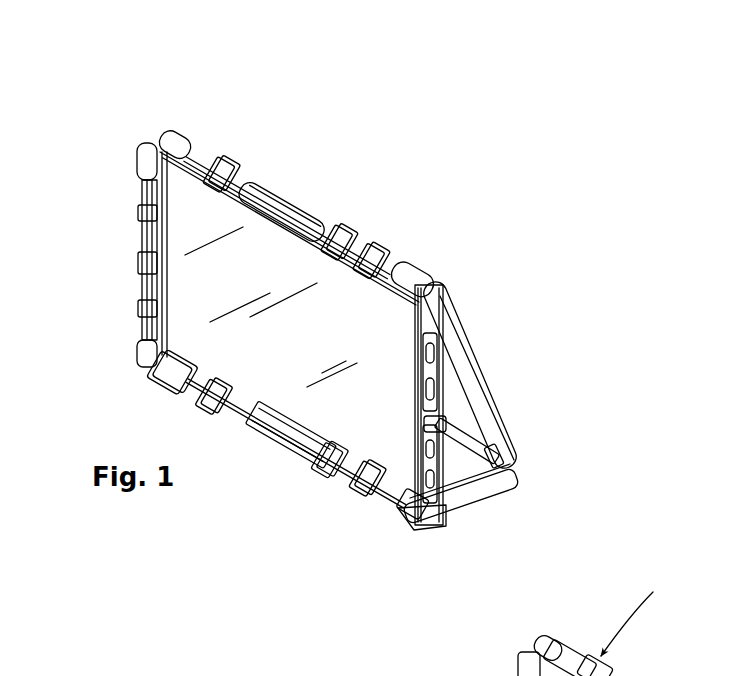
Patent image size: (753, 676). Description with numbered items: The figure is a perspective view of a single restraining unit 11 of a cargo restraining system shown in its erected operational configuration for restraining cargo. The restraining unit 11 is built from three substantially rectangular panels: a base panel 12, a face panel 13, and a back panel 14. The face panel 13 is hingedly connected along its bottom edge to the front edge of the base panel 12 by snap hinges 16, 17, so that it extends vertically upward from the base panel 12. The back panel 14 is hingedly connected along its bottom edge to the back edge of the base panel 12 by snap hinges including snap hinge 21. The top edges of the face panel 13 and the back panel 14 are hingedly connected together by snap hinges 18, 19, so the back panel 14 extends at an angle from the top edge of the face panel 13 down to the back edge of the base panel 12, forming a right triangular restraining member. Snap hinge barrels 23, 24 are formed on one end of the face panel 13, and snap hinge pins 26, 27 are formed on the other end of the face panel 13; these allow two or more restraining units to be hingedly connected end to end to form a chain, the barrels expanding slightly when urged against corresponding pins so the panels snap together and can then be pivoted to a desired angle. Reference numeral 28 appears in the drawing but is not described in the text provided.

The restraining unit 11 is at (542, 196).
The base panel 12 is at (458, 486).
The face panel 13 is at (360, 400).
The back panel 14 is at (464, 342).
The snap hinge 16 is at (352, 506).
The snap hinge 17 is at (196, 421).
The snap hinge 18 is at (391, 230).
The snap hinge 19 is at (241, 157).
The snap hinge 21 is at (462, 412).
The snap hinge barrel 23 is at (408, 474).
The snap hinge barrel 24 is at (417, 377).
The snap hinge pin 26 is at (143, 287).
The snap hinge pin 27 is at (140, 233).
The clip body 28 is at (505, 662).